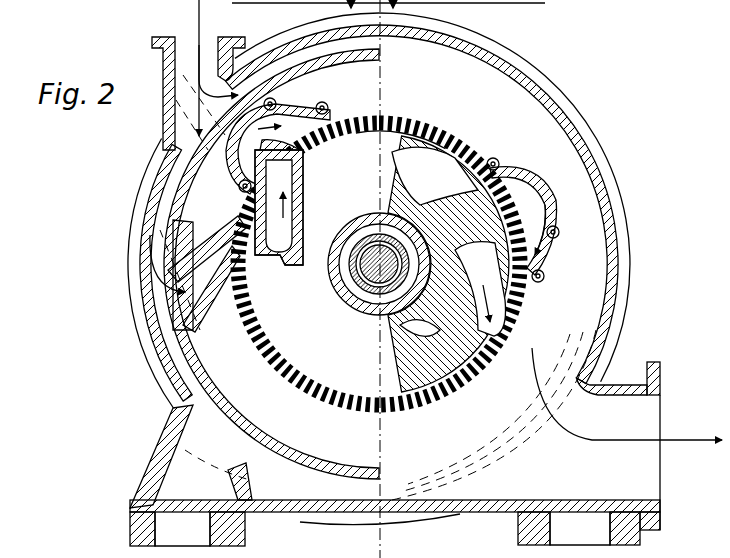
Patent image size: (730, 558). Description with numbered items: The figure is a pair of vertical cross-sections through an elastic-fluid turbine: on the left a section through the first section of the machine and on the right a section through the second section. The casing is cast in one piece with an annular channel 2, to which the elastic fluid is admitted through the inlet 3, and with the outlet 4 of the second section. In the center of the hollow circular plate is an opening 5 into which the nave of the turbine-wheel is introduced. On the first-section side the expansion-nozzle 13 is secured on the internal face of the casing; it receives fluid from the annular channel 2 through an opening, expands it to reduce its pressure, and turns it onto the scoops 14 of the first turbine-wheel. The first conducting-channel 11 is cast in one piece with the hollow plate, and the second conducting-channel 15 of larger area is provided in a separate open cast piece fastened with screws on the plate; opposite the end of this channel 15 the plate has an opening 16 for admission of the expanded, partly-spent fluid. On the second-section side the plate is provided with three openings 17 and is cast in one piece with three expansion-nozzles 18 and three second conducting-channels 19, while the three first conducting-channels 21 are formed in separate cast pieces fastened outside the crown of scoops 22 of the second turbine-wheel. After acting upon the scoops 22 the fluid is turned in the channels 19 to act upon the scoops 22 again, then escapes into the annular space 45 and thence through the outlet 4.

The annular channel 2 is at (290, 63).
The inlet 3 is at (203, 48).
The outlet 4 is at (632, 473).
The opening 5 is at (336, 270).
The first conducting-channel 11 is at (268, 252).
The expansion-nozzle 13 is at (190, 234).
The scoops 14 is at (325, 402).
The second conducting-channel 15 is at (288, 122).
The opening 16 is at (334, 135).
The openings 17 is at (435, 248).
The expansion-nozzles 18 is at (447, 183).
The second conducting-channels 19 is at (480, 289).
The first conducting-channels 21 is at (530, 205).
The scoops 22 is at (449, 270).
The annular space 45 is at (305, 264).